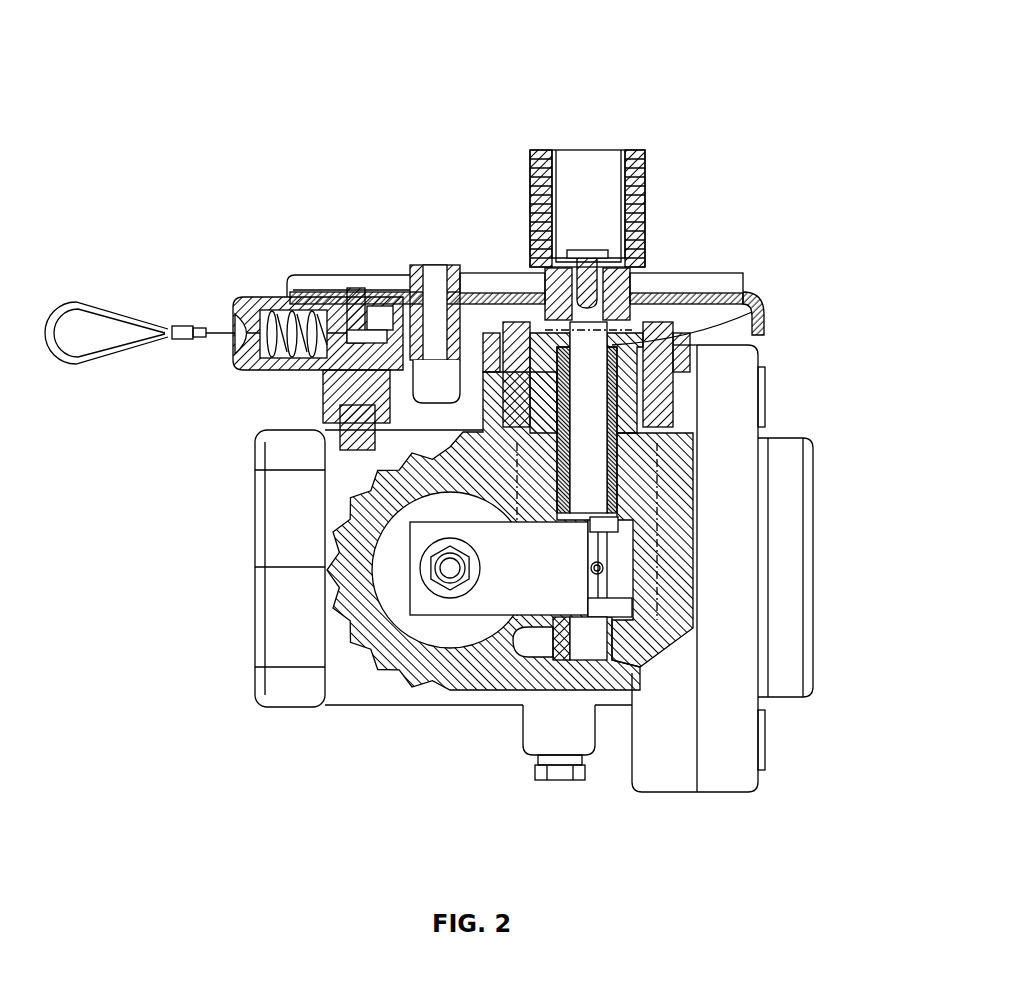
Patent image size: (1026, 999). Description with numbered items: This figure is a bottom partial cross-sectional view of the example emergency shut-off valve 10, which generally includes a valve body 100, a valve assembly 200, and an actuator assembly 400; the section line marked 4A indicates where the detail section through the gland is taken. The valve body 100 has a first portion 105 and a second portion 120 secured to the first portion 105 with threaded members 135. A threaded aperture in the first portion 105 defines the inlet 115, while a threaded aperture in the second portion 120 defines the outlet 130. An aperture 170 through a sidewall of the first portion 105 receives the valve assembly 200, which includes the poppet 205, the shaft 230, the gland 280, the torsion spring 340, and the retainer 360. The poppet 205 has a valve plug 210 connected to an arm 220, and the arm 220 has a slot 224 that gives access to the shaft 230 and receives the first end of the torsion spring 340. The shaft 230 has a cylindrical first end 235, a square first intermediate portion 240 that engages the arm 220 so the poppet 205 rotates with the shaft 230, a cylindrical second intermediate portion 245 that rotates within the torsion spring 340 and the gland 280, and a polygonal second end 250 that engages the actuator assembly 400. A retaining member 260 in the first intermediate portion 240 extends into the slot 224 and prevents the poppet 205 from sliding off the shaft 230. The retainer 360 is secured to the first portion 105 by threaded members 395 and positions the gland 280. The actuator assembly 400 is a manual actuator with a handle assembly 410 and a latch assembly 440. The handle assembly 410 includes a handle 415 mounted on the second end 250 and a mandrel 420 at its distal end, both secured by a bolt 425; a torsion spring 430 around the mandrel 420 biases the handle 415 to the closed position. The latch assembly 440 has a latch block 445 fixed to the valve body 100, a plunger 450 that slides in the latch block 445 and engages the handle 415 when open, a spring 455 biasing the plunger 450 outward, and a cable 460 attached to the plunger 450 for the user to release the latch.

The emergency shut-off valve 10 is at (160, 40).
The valve body 100 is at (695, 815).
The first portion 105 is at (536, 570).
The inlet 115 is at (242, 566).
The second portion 120 is at (737, 775).
The outlet 130 is at (830, 562).
The threaded members 135 is at (768, 397).
The aperture 170 is at (640, 407).
The valve assembly 200 is at (640, 322).
The poppet 205 is at (512, 672).
The valve plug 210 is at (470, 632).
The arm 220 is at (483, 533).
The slot 224 is at (600, 580).
The shaft 230 is at (587, 680).
The first end 235 is at (585, 647).
The first intermediate portion 240 is at (600, 540).
The second intermediate portion 245 is at (600, 462).
The second end 250 is at (547, 266).
The retaining member 260 is at (590, 567).
The gland 280 is at (653, 302).
The torsion spring 340 is at (550, 497).
The retainer 360 is at (763, 325).
The threaded members 395 is at (494, 333).
The actuator assembly 400 is at (357, 257).
The handle assembly 410 is at (733, 226).
The handle 415 is at (730, 283).
The mandrel 420 is at (585, 193).
The bolt 425 is at (582, 253).
The torsion spring 430 is at (645, 172).
The latch assembly 440 is at (198, 305).
The latch block 445 is at (252, 376).
The plunger 450 is at (322, 383).
The spring 455 is at (280, 313).
The cable 460 is at (65, 305).
The section view indicator 4A is at (655, 432).